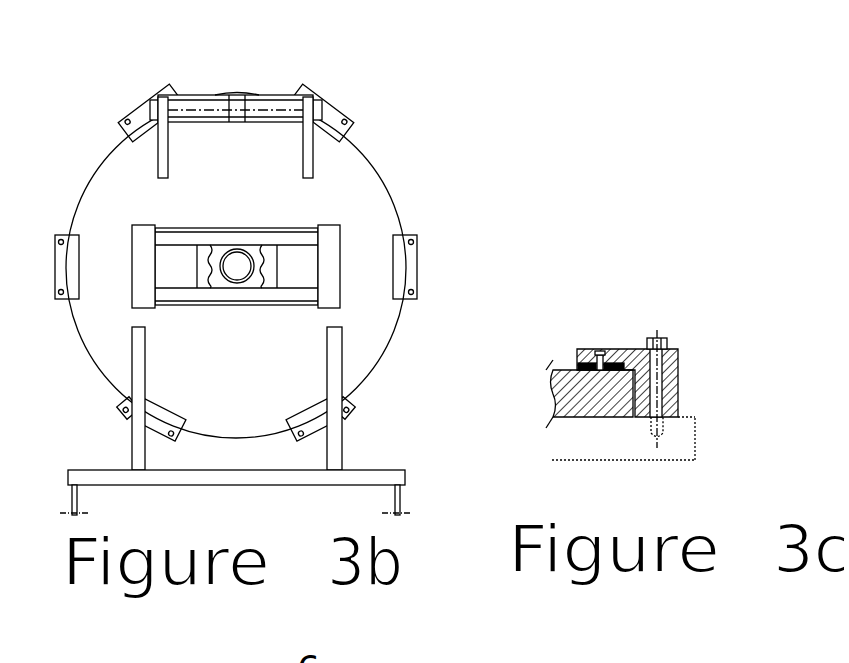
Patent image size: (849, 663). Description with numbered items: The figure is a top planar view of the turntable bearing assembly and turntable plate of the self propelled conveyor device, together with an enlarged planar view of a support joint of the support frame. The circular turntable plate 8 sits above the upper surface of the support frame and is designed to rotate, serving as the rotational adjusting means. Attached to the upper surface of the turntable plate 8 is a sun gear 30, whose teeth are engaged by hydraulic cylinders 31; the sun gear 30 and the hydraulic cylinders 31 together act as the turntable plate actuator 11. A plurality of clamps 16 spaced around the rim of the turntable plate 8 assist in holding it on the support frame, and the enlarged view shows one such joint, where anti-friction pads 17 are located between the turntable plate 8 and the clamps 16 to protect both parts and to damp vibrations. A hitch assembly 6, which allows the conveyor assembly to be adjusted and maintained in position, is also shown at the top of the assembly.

In FIG. 3b, the hitch assembly 6 is at (262, 93).
In FIG. 3b, the turntable plate 8 is at (389, 184).
In FIG. 3c, the turntable plate 8 is at (587, 420).
In FIG. 3b, the turntable plate actuator 11 is at (128, 224).
In FIG. 3b, the clamps 16 is at (346, 113).
In FIG. 3c, the clamps 16 is at (623, 347).
In FIG. 3c, the anti-friction pads 17 is at (576, 371).
In FIG. 3b, the sun gear 30 is at (262, 260).
In FIG. 3b, the hydraulic cylinders 31 is at (183, 228).